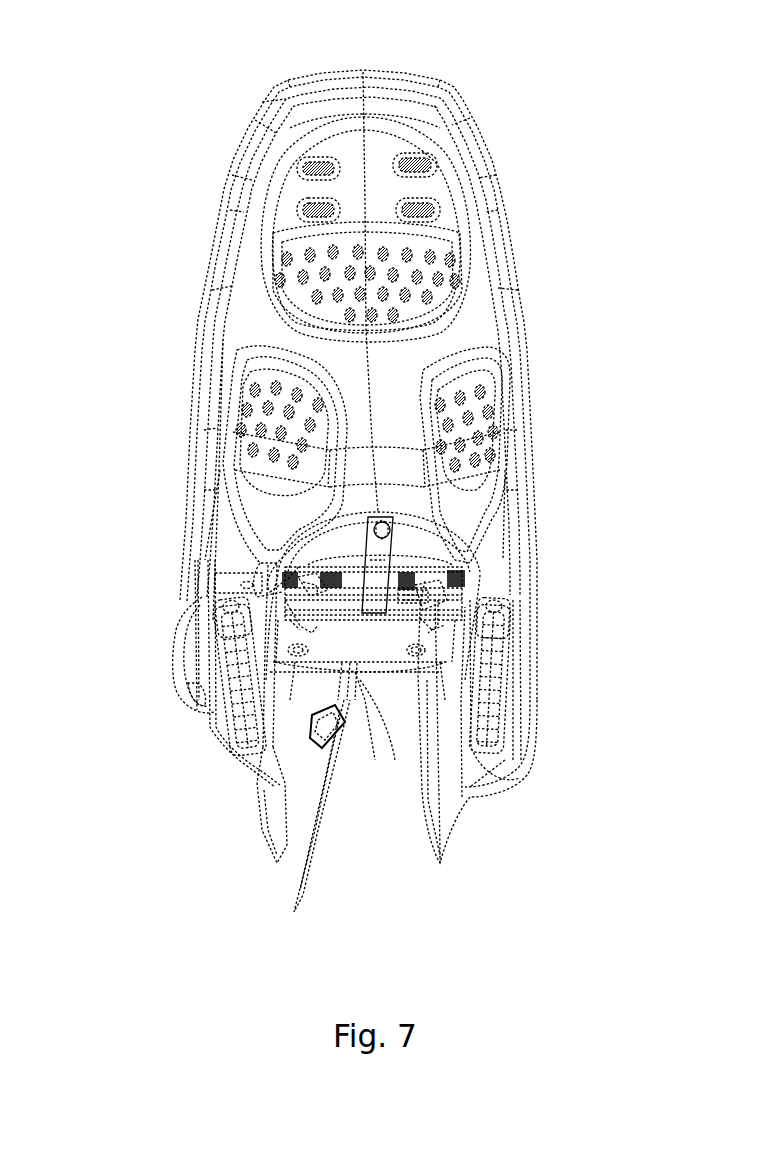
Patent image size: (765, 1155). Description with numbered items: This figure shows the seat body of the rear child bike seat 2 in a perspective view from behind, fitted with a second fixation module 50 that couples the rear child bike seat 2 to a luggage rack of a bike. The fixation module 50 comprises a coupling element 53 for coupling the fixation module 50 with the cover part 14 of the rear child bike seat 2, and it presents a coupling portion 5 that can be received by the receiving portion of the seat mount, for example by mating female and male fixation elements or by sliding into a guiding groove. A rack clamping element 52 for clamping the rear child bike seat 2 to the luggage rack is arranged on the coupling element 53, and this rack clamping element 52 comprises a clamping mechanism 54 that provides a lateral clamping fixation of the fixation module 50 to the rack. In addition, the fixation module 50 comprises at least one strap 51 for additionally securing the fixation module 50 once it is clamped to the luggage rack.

The rear child bike seat 2 is at (120, 137).
The cover part 14 is at (492, 308).
The fixation module 50 is at (291, 516).
The coupling portion 5 is at (424, 538).
The clamping mechanism 54 is at (427, 597).
The rack clamping element 52 is at (328, 658).
The strap 51 is at (310, 828).
The coupling element 53 is at (370, 643).